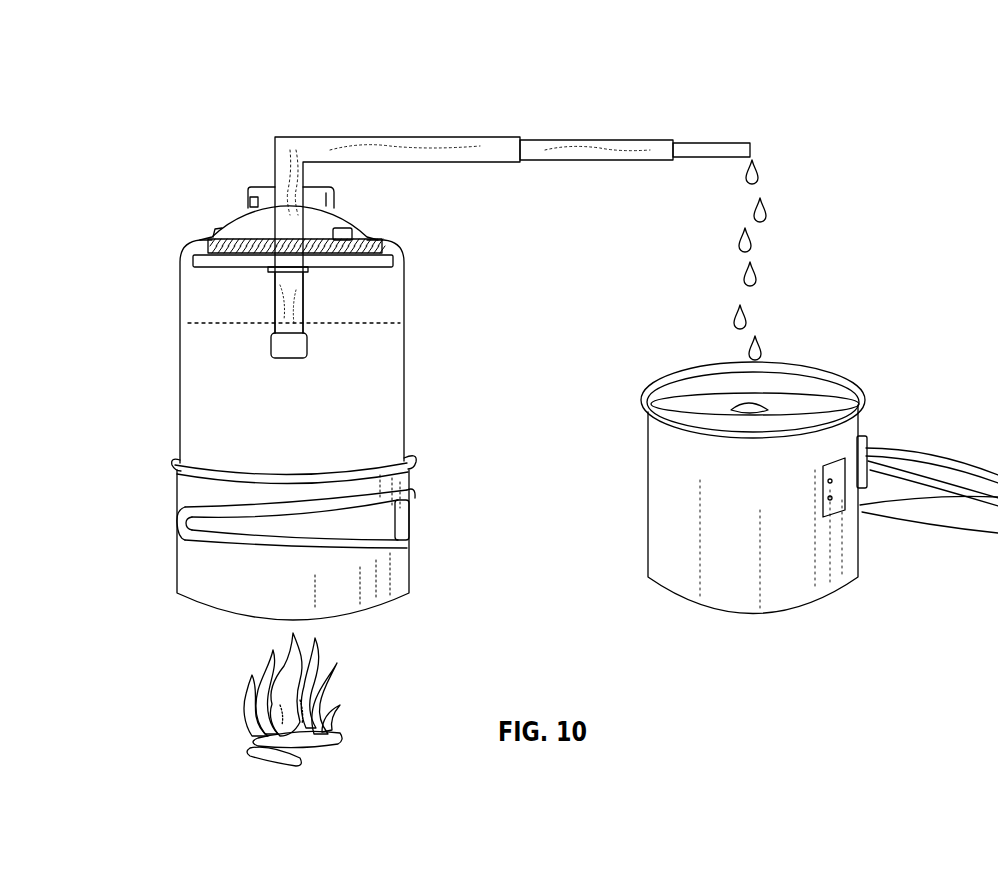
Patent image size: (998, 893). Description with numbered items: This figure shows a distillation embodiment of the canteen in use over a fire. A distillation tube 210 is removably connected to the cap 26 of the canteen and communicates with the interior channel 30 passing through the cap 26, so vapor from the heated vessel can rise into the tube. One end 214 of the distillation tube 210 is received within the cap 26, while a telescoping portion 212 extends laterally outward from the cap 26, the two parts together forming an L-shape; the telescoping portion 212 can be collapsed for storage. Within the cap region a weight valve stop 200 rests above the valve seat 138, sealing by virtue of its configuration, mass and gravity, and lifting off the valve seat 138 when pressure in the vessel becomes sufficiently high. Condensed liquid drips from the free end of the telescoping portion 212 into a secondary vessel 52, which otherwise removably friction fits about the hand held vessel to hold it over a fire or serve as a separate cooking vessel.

The cap 26 is at (250, 213).
The interior channel 30 is at (307, 268).
The secondary vessel 52 is at (819, 488).
The valve seat 138 is at (275, 320).
The weight valve stop 200 is at (303, 300).
The distillation tube 210 is at (313, 165).
The telescoping portion 212 is at (521, 136).
The one end 214 is at (270, 207).